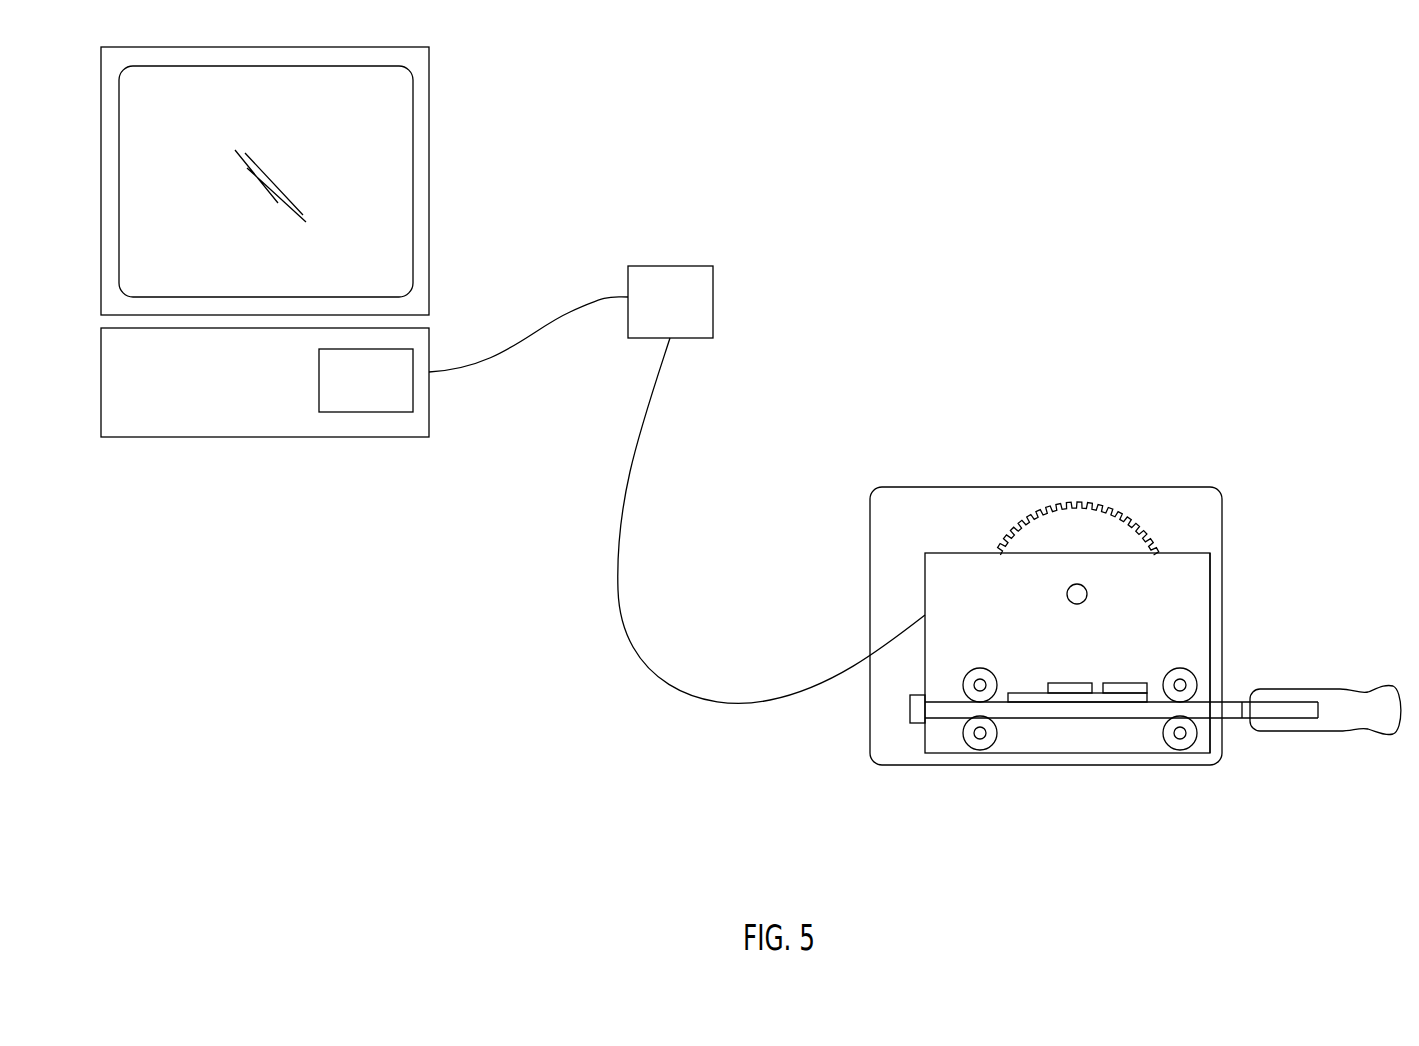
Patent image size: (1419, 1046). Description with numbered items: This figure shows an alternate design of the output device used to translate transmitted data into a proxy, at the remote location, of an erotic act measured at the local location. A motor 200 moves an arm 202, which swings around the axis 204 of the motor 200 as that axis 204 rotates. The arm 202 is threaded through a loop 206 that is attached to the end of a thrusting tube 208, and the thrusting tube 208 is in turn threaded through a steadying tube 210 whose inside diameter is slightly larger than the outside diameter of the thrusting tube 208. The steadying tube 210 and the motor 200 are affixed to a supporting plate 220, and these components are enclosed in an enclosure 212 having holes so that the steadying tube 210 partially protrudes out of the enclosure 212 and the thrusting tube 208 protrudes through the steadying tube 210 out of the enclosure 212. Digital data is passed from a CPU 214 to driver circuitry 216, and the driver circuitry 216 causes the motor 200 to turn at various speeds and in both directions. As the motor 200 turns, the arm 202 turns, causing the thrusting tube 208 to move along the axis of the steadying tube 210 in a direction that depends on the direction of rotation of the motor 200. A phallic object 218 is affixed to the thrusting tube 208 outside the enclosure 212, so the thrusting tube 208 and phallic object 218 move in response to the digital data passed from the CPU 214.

The motor 200 is at (1093, 577).
The arm 202 is at (950, 553).
The axis 204 is at (1068, 586).
The loop 206 is at (1052, 703).
The thrusting tube 208 is at (1110, 752).
The steadying tube 210 is at (975, 688).
The enclosure 212 is at (960, 757).
The CPU 214 is at (275, 425).
The driver circuitry 216 is at (695, 311).
The phallic object 218 is at (1341, 703).
The supporting plate 220 is at (1187, 553).